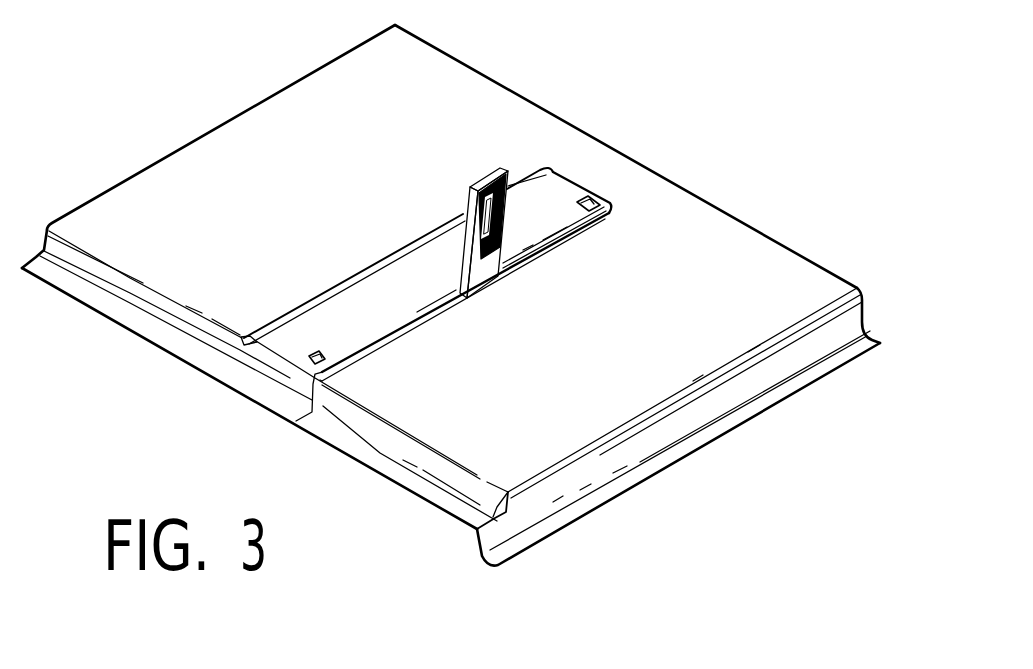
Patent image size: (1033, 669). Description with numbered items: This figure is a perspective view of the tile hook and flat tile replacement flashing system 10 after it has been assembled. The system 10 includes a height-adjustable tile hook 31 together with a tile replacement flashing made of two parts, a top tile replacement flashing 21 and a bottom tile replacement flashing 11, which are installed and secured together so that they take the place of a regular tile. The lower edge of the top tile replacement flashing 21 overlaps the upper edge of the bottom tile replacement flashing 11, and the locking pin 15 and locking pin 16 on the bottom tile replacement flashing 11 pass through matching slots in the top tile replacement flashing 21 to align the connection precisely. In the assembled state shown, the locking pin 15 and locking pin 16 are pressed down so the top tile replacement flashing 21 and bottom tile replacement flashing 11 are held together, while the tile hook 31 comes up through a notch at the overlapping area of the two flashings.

The tile hook and flat tile replacement flashing system 10 is at (797, 78).
The bottom tile replacement flashing 11 is at (750, 227).
The locking pin 15 is at (313, 355).
The locking pin 16 is at (588, 196).
The top tile replacement flashing 21 is at (178, 148).
The height-adjustable tile hook 31 is at (487, 173).